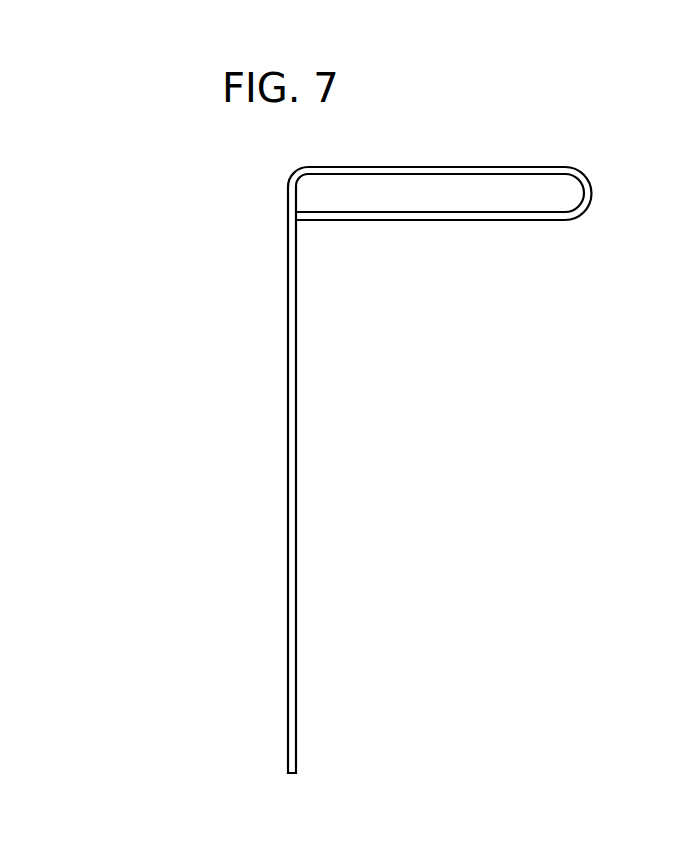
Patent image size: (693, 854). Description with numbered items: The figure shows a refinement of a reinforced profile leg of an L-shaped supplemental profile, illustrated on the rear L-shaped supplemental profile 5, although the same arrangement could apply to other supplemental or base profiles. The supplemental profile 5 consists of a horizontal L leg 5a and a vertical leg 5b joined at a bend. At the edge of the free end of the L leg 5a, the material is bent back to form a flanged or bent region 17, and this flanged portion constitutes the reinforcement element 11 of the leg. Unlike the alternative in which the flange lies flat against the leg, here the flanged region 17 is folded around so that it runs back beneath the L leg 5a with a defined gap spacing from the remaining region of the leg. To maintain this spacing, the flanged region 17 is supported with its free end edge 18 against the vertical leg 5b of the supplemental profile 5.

The rear L-shaped supplemental profile 5 is at (263, 466).
The L leg 5a is at (531, 169).
The vertical leg 5b is at (297, 492).
The reinforcement element 11 is at (462, 214).
The flanged or bent region 17 is at (536, 221).
The free end edge 18 is at (297, 219).